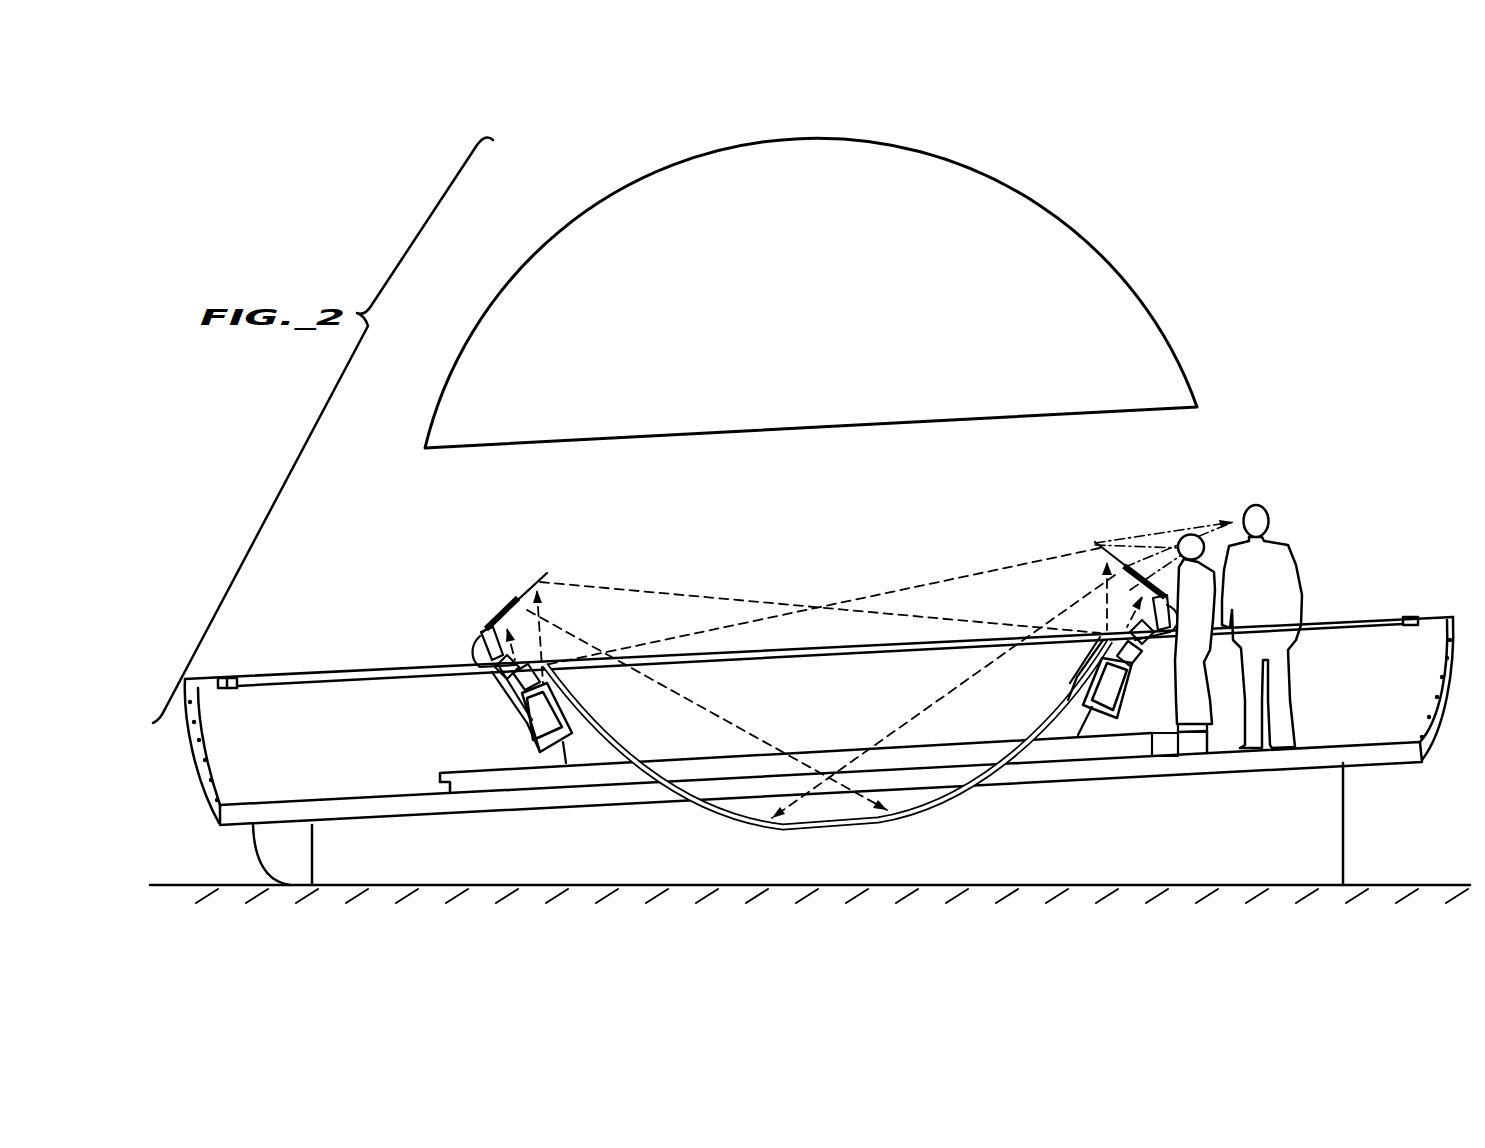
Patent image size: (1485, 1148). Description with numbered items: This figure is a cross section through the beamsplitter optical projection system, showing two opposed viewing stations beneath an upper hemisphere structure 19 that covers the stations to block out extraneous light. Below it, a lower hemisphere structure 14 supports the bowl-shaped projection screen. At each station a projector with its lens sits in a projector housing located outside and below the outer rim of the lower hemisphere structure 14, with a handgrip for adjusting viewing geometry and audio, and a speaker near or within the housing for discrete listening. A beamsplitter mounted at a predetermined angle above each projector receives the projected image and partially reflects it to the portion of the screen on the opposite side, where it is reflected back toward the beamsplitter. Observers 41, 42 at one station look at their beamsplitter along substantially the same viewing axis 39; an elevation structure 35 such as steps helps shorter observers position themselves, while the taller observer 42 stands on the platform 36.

The upper hemisphere structure 19 is at (838, 392).
The lower hemisphere structure 14 is at (722, 815).
The elevation structure 35 is at (1190, 745).
The platform 36 is at (1353, 757).
The viewing axis 39 is at (1217, 520).
The observer 41 is at (1175, 535).
The observer 42 is at (1262, 505).